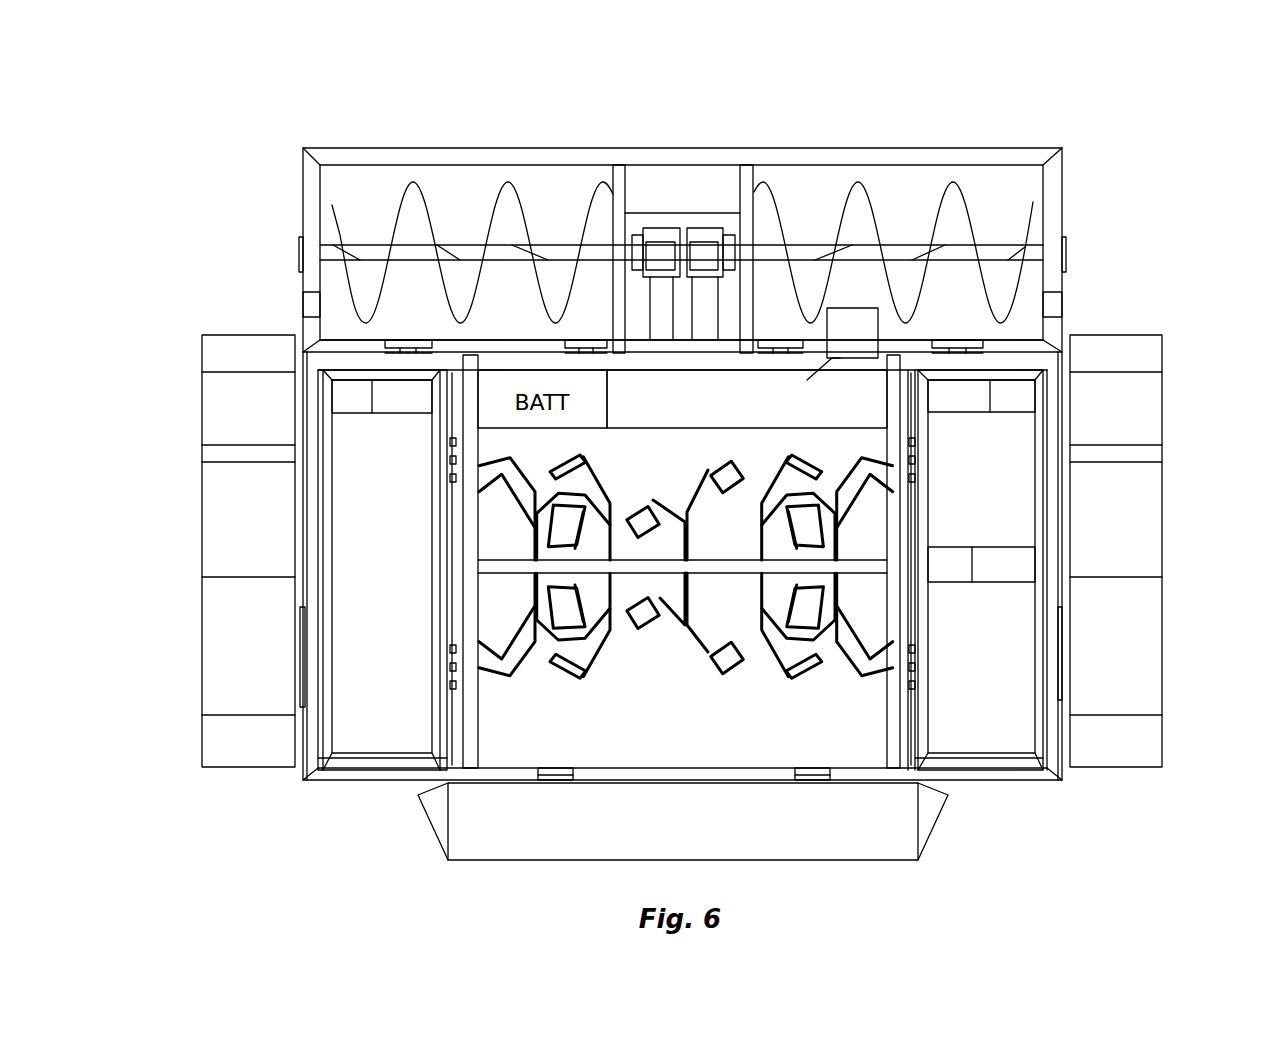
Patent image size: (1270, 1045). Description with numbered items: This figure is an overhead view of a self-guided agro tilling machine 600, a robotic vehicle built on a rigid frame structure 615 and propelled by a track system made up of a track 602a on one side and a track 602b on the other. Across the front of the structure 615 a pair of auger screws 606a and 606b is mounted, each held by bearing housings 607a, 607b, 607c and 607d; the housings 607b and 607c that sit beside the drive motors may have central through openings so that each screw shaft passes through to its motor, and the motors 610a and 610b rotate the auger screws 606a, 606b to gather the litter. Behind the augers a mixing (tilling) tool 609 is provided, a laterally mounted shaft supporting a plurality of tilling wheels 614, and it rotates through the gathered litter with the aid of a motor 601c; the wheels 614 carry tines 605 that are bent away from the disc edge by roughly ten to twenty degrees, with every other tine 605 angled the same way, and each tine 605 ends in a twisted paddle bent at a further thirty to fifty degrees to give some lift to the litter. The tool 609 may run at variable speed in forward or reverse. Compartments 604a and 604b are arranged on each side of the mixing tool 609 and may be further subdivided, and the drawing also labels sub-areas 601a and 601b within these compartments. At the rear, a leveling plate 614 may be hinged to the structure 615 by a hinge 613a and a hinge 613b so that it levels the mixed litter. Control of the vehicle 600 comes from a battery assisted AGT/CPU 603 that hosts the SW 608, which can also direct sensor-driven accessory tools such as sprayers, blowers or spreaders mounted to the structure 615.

The self-guided agro tilling machine 600 is at (683, 105).
The rigid frame structure 615 is at (422, 148).
The auger screw 606a is at (395, 228).
The auger screw 606b is at (842, 222).
The bearing housing 607a is at (298, 258).
The bearing housing 607b is at (632, 236).
The bearing housing 607c is at (1067, 250).
The bearing housing 607d is at (728, 236).
The motor 610a is at (660, 258).
The motor 610b is at (706, 258).
The SW 608 is at (886, 337).
The battery assisted AGT/CPU 603 is at (691, 440).
The track 602a is at (200, 432).
The track 602b is at (1165, 665).
The left door compartment 601a is at (423, 416).
The right door upper compartment 601b is at (1022, 414).
The motor 601c is at (1026, 547).
The compartment 604a is at (333, 676).
The compartment 604b is at (1035, 666).
The tine 605 is at (880, 477).
The mixing (tilling) tool 609 is at (723, 576).
The hinge 613a is at (570, 767).
The hinge 613b is at (820, 767).
The leveling plate 614 is at (585, 861).